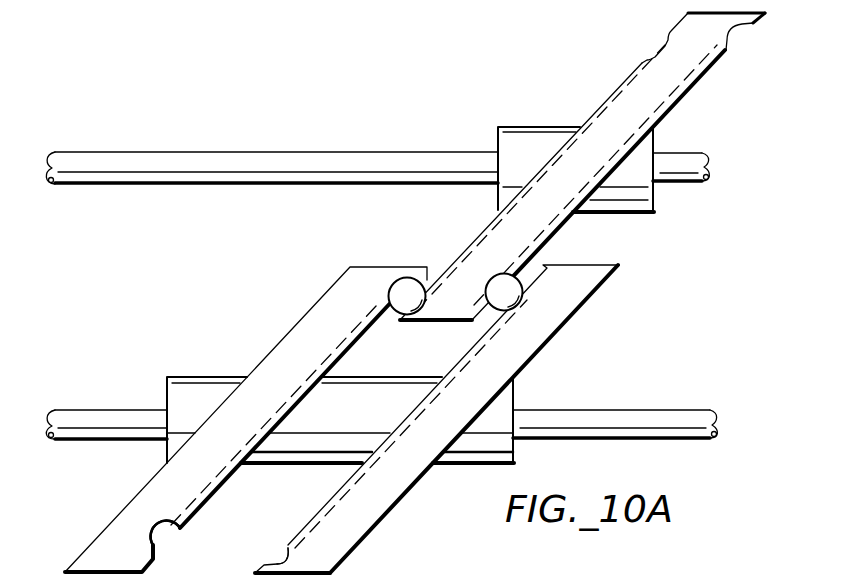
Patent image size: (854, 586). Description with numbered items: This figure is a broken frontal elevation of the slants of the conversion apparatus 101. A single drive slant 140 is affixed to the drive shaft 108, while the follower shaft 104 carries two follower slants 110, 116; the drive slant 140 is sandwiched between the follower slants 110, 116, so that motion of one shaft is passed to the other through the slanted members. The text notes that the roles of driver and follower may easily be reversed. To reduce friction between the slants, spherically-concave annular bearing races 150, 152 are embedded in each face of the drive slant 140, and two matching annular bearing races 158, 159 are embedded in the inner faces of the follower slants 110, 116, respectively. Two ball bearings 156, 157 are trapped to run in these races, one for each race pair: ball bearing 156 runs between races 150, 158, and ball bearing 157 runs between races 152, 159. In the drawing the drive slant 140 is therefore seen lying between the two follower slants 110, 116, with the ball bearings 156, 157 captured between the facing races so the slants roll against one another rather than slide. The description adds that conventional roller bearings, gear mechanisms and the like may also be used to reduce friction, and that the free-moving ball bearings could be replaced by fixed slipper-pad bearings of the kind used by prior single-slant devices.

The conversion apparatus 101 is at (190, 290).
The follower shaft 104 is at (611, 418).
The drive shaft 108 is at (692, 183).
The follower slant 110 is at (423, 419).
The follower slant 116 is at (246, 421).
The drive slant 140 is at (583, 164).
The bearing race 150 is at (737, 25).
The bearing race 152 is at (662, 50).
The ball bearing 156 is at (522, 290).
The ball bearing 157 is at (438, 279).
The bearing race 158 is at (284, 556).
The bearing race 159 is at (158, 542).